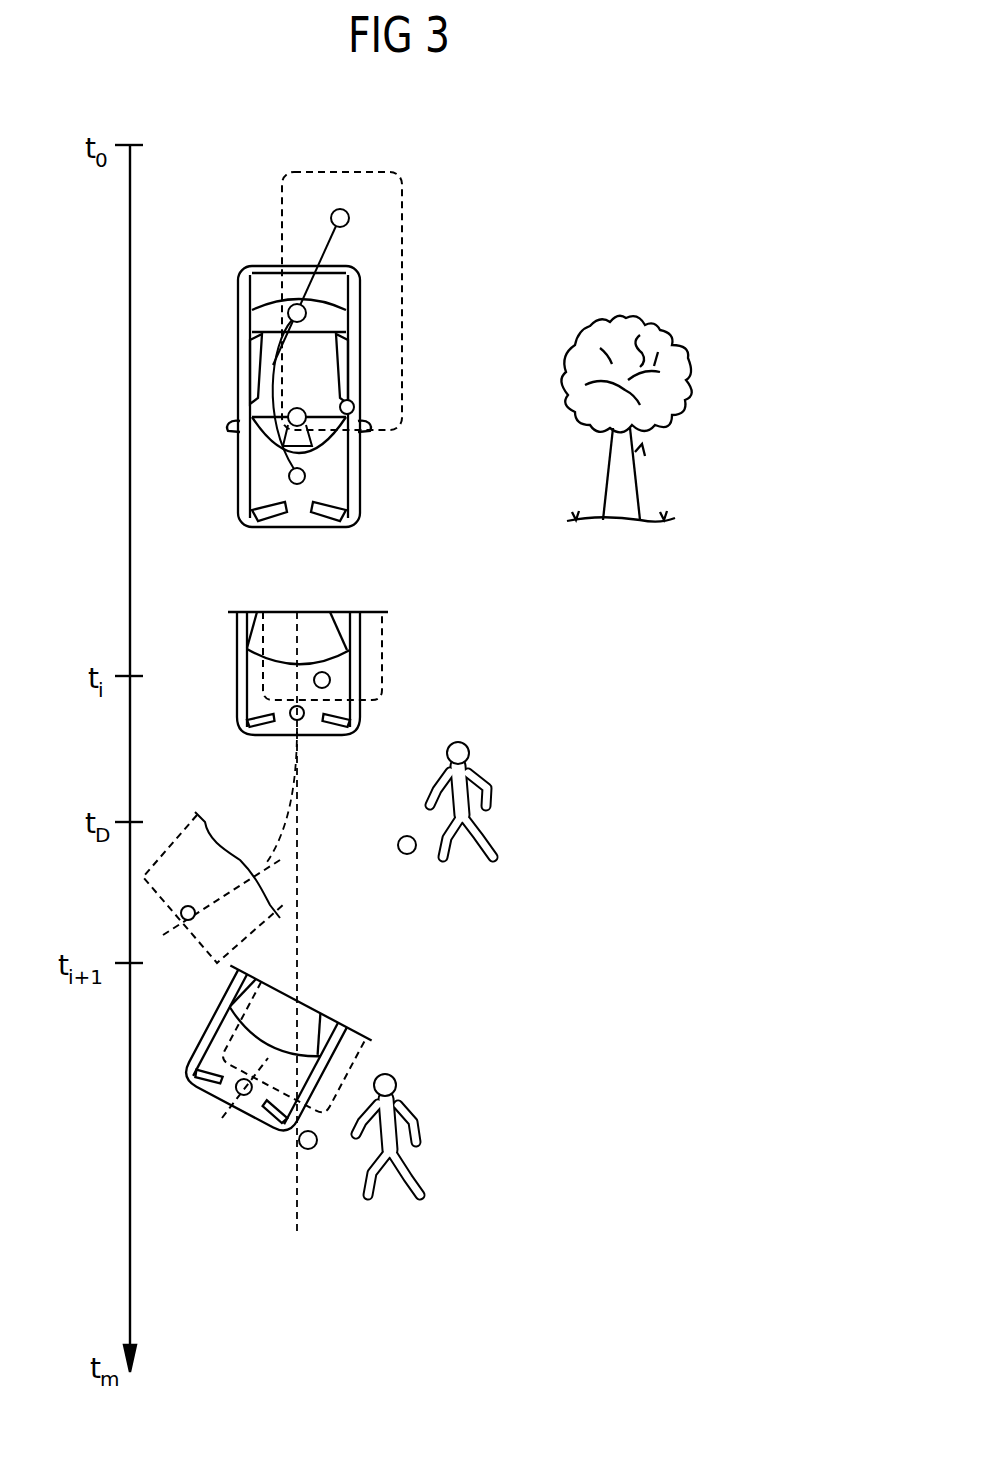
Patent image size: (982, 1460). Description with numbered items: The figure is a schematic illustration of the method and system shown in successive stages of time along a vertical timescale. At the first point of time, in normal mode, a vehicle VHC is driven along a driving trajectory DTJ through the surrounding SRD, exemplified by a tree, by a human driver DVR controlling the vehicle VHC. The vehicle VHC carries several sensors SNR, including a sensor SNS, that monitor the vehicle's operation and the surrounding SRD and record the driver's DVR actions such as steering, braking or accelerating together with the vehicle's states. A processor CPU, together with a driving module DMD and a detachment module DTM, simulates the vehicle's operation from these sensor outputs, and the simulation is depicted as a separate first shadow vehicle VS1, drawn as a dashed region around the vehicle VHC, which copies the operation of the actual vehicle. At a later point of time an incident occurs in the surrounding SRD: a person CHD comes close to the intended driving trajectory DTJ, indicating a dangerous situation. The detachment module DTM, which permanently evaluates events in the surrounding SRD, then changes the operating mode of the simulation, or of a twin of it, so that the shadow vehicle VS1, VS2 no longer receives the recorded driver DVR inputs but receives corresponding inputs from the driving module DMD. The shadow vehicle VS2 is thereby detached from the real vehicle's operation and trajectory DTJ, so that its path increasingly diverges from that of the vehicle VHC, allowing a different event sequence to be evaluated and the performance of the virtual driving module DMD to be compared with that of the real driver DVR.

The vehicle VHC is at (238, 490).
The first shadow vehicle VS1 is at (402, 293).
The second shadow vehicle VS2 is at (383, 637).
The processor CPU is at (464, 324).
The driving module DMD is at (464, 324).
The detachment module DTM is at (349, 222).
The driver DVR is at (257, 418).
The sensor SNS is at (354, 407).
The sensors SNR is at (306, 476).
The surrounding SRD is at (675, 390).
The person CHD is at (470, 792).
The driving trajectory DTJ is at (300, 910).